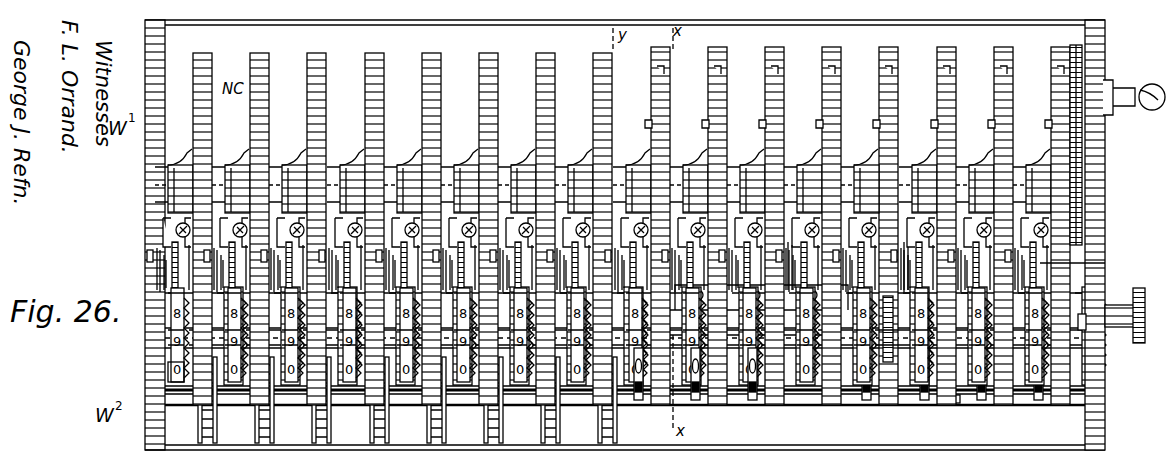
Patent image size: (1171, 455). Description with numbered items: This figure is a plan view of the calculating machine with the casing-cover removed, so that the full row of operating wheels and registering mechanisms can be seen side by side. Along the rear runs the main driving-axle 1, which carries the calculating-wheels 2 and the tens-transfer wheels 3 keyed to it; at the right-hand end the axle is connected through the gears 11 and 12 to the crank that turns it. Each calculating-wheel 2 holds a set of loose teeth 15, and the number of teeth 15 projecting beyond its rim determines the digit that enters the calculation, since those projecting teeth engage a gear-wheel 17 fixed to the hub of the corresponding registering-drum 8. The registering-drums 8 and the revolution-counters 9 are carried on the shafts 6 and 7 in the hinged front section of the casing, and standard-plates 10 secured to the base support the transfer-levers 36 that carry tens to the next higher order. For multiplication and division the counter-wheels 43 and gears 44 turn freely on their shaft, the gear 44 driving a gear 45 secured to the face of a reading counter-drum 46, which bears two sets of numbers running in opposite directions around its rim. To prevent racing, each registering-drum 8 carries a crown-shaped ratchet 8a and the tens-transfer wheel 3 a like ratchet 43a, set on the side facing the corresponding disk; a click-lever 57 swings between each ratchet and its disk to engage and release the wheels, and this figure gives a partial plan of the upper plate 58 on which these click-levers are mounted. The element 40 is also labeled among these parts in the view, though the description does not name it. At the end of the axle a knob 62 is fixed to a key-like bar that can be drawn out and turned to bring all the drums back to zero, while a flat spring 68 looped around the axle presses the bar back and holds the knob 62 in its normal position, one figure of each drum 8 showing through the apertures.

The main driving-axle 1 is at (625, 235).
The calculating-wheel 2 is at (832, 80).
The tens-transfer wheel 3 is at (383, 80).
The shaft 6 is at (1090, 345).
The shaft 7 is at (748, 398).
The registering-drum 8 is at (1040, 378).
The crown-shaped ratchet 8a is at (950, 403).
The revolution-counter 9 is at (340, 336).
The standard-plate 10 is at (1105, 266).
The gear 11 is at (1082, 170).
The gear 12 is at (1080, 72).
The loose tooth 15 is at (920, 27).
The gear-wheel 17 is at (740, 360).
The transfer-lever 36 is at (754, 275).
The spring 40 is at (889, 266).
The counter-wheel 43 is at (174, 333).
The crown-shaped ratchet 43a is at (372, 382).
The gear 44 is at (134, 378).
The gear 45 is at (484, 427).
The reading counter-drum 46 is at (322, 400).
The click-lever 57 is at (709, 310).
The plate 58 is at (755, 310).
The knob 62 is at (1151, 315).
The flat spring 68 is at (1086, 322).